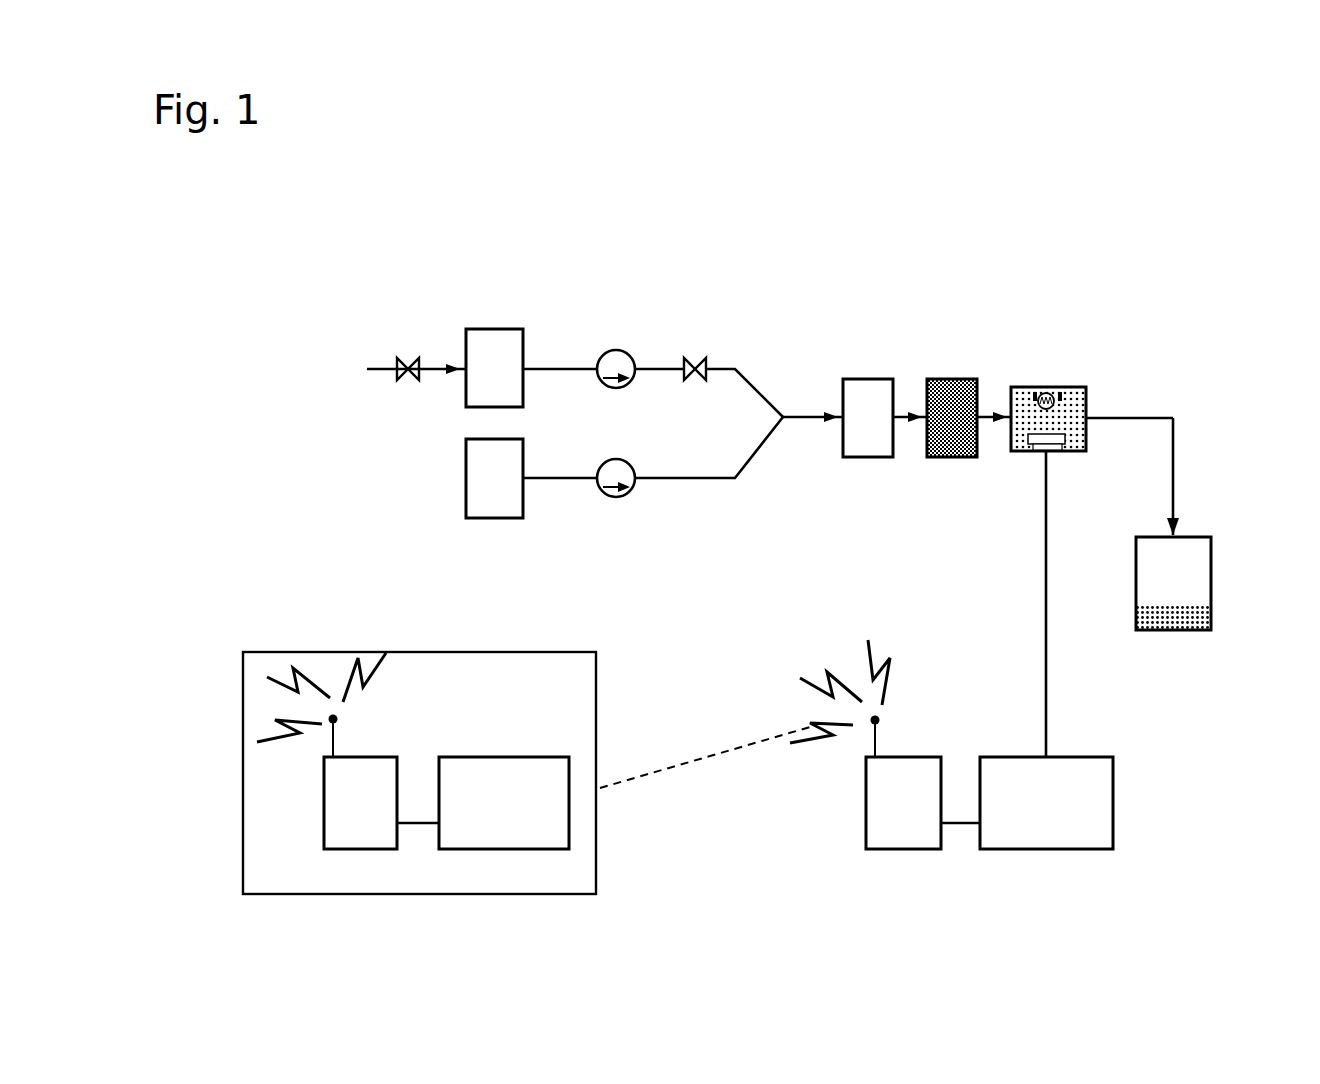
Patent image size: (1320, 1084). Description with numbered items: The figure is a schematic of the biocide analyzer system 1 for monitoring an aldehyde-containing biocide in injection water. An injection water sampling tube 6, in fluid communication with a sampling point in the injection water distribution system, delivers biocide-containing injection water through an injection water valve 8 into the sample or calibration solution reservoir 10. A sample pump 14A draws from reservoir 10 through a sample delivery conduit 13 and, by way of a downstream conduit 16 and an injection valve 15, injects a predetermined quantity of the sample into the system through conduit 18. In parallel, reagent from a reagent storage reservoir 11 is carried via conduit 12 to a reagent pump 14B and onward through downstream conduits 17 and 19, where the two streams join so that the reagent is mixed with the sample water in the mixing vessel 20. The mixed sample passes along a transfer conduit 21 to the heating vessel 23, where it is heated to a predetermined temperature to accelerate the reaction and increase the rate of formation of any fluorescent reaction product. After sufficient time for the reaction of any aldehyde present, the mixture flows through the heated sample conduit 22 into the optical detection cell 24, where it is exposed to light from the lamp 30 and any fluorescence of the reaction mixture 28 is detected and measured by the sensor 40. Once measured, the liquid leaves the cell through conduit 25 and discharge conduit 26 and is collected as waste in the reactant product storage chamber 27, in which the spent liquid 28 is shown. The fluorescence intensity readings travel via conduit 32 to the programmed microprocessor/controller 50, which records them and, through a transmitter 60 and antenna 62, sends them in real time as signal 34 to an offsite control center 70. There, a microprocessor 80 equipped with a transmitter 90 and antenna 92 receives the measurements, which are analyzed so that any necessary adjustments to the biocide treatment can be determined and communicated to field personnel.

The biocide analyzer system 1 is at (691, 270).
The injection water sampling tube 6 is at (378, 362).
The injection water valve 8 is at (408, 356).
The sample or calibration solution reservoir 10 is at (510, 329).
The reagent storage reservoir 11 is at (493, 519).
The conduit 12 is at (567, 482).
The sample delivery conduit 13 is at (575, 368).
The sample pump 14A is at (613, 350).
The reagent pump 14B is at (613, 500).
The injection valve 15 is at (697, 357).
The line 16 is at (647, 371).
The downstream conduit 17 is at (693, 477).
The line 18 is at (743, 377).
The downstream conduit 19 is at (792, 413).
The mixing vessel 20 is at (868, 458).
The line 21 is at (912, 420).
The heated sample conduit 22 is at (988, 420).
The heating vessel 23 is at (948, 378).
The optical detection cell 24 is at (1020, 386).
The outlet line 25 is at (1107, 413).
The discharge conduit 26 is at (1178, 429).
The reactant product storage chamber 27 is at (1212, 590).
The reaction mixture 28 is at (1152, 613).
The lamp 30 is at (1051, 391).
The conduit 32 is at (1043, 702).
The signal 34 is at (690, 762).
The sensor 40 is at (1053, 443).
The microprocessor/controller 50 is at (1113, 793).
The transmitter 60 is at (903, 850).
The antenna 62 is at (880, 733).
The offsite control center 70 is at (472, 652).
The microprocessor 80 is at (480, 757).
The transmitter 90 is at (324, 827).
The antenna 92 is at (340, 733).